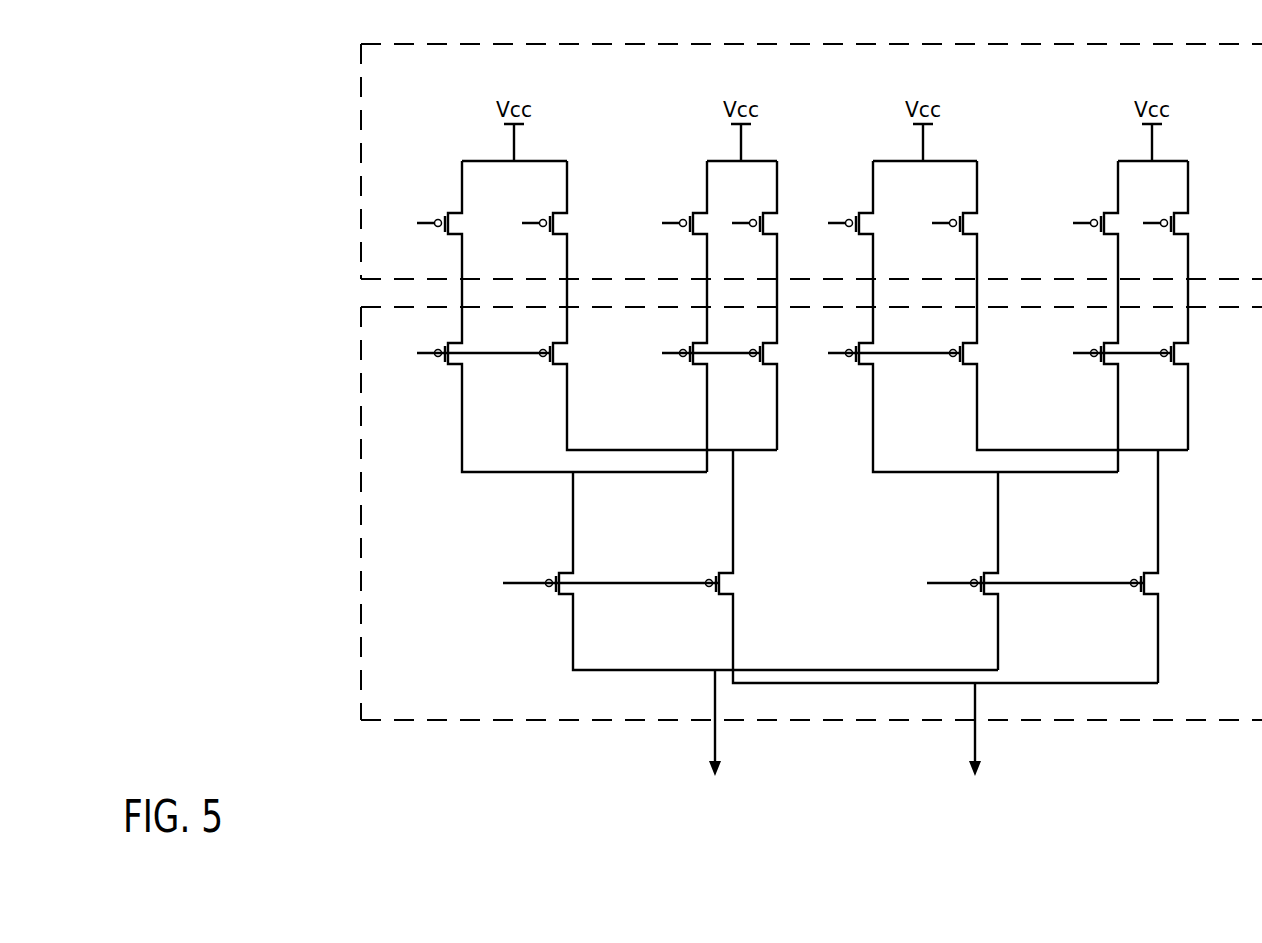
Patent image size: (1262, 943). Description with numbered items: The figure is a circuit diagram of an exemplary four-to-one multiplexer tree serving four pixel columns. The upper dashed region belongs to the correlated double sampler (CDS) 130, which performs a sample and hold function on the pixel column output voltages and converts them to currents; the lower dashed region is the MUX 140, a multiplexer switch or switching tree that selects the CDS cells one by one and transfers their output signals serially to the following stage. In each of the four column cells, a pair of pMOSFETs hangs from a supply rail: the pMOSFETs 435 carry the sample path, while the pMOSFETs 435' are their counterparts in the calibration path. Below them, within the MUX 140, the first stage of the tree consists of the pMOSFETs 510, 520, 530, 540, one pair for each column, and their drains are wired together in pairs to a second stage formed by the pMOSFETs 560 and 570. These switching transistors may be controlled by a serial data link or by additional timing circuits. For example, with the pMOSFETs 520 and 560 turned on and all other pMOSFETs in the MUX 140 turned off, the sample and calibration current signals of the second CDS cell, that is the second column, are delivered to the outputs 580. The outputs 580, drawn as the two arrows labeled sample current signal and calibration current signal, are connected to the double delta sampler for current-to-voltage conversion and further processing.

The correlated double sampler (CDS) 130 is at (361, 215).
The MUX 140 is at (362, 665).
The pMOSFETs 435 is at (765, 205).
The pMOSFETs 435' is at (883, 223).
The pMOSFETs 510 is at (451, 366).
The pMOSFETs 520 is at (763, 366).
The pMOSFETs 530 is at (861, 366).
The pMOSFETs 540 is at (1176, 366).
The pMOSFETs 560 is at (561, 596).
The pMOSFETs 570 is at (985, 596).
The outputs 580 is at (715, 740).